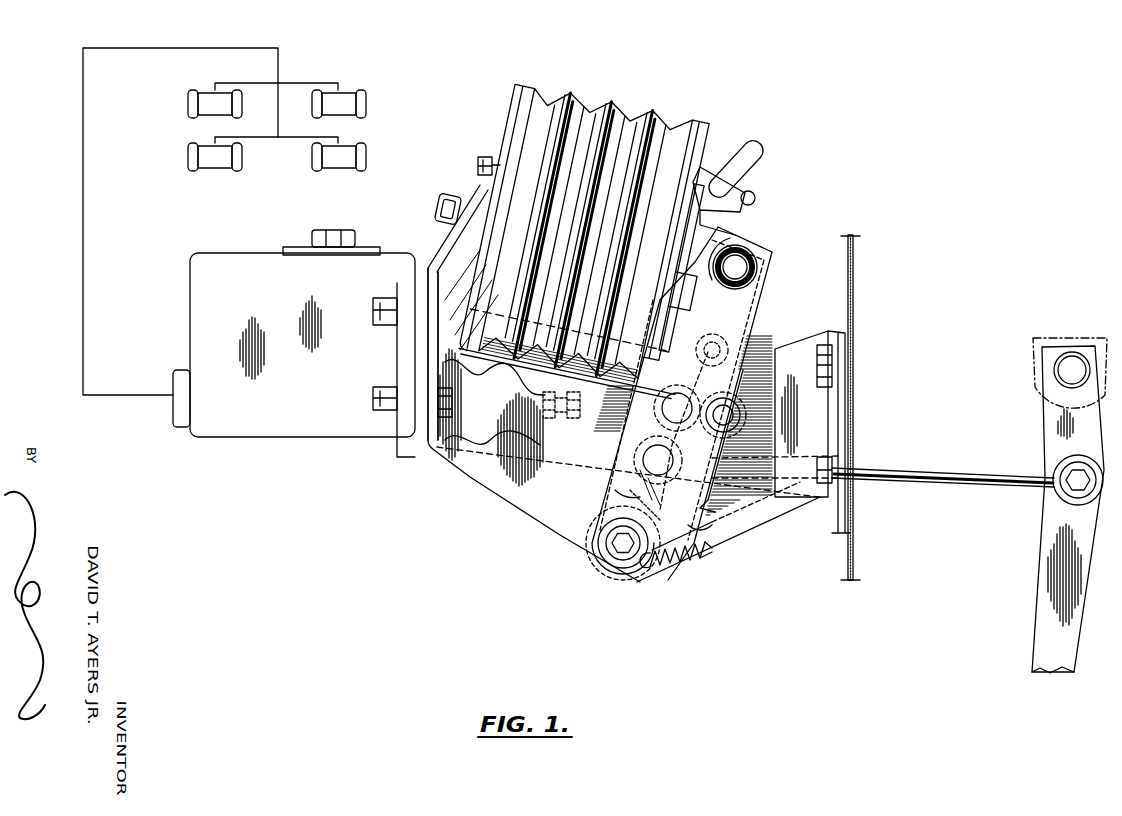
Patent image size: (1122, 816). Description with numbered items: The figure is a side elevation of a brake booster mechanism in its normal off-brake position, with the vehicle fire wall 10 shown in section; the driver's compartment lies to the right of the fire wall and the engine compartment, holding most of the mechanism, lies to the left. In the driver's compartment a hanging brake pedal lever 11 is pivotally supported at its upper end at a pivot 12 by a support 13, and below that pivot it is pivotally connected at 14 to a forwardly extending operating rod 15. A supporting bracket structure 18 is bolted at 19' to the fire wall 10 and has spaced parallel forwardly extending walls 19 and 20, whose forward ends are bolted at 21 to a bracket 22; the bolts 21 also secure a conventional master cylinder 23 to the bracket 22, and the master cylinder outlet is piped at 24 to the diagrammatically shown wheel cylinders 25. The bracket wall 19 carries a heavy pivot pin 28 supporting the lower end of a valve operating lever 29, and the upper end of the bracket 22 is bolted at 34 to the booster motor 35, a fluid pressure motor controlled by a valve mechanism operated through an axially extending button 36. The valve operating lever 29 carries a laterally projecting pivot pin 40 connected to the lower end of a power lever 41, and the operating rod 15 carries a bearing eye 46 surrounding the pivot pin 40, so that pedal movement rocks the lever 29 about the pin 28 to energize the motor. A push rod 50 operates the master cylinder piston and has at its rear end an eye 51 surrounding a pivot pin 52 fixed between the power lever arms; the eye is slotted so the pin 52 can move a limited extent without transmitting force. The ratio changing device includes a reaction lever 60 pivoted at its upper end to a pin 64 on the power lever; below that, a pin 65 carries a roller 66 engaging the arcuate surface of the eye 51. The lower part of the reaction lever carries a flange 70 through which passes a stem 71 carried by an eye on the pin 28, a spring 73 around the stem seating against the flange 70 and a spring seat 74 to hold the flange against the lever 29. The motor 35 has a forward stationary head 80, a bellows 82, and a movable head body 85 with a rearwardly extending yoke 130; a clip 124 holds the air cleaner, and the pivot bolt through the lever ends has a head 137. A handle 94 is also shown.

The fire wall 10 is at (853, 290).
The brake pedal lever 11 is at (1046, 438).
The pivot 12 is at (1055, 372).
The support 13 is at (1033, 348).
The pivotal connection 14 is at (1062, 488).
The operating rod 15 is at (950, 470).
The supporting bracket structure 18 is at (530, 515).
The bracket wall 19 is at (728, 532).
The bolts 19' is at (851, 414).
The bracket wall 20 is at (780, 348).
The bolts 21 is at (452, 402).
The bracket 22 is at (436, 450).
The master cylinder 23 is at (347, 437).
The pipe 24 is at (150, 395).
The wheel cylinders 25 is at (188, 158).
The pivot pin 28 is at (621, 560).
The valve operating lever 29 is at (625, 492).
The bolts 34 is at (478, 166).
The booster motor 35 is at (645, 101).
The button 36 is at (728, 210).
The pivot pin 40 is at (655, 462).
The power lever 41 is at (764, 303).
The bearing eye 46 is at (670, 486).
The push rod 50 is at (583, 412).
The eye 51 is at (681, 388).
The pivot pin 52 is at (672, 418).
The reaction lever 60 is at (718, 506).
The pin 64 is at (716, 341).
The pin 65 is at (733, 416).
The roller 66 is at (720, 432).
The flange 70 is at (700, 528).
The stem 71 is at (705, 556).
The spring 73 is at (652, 570).
The spring seat 74 is at (703, 552).
The stationary head 80 is at (521, 100).
The bellows 82 is at (583, 95).
The movable head body 85 is at (706, 125).
The handle 94 is at (762, 155).
The clip 124 is at (438, 205).
The yoke 130 is at (700, 232).
The head 137 is at (750, 262).